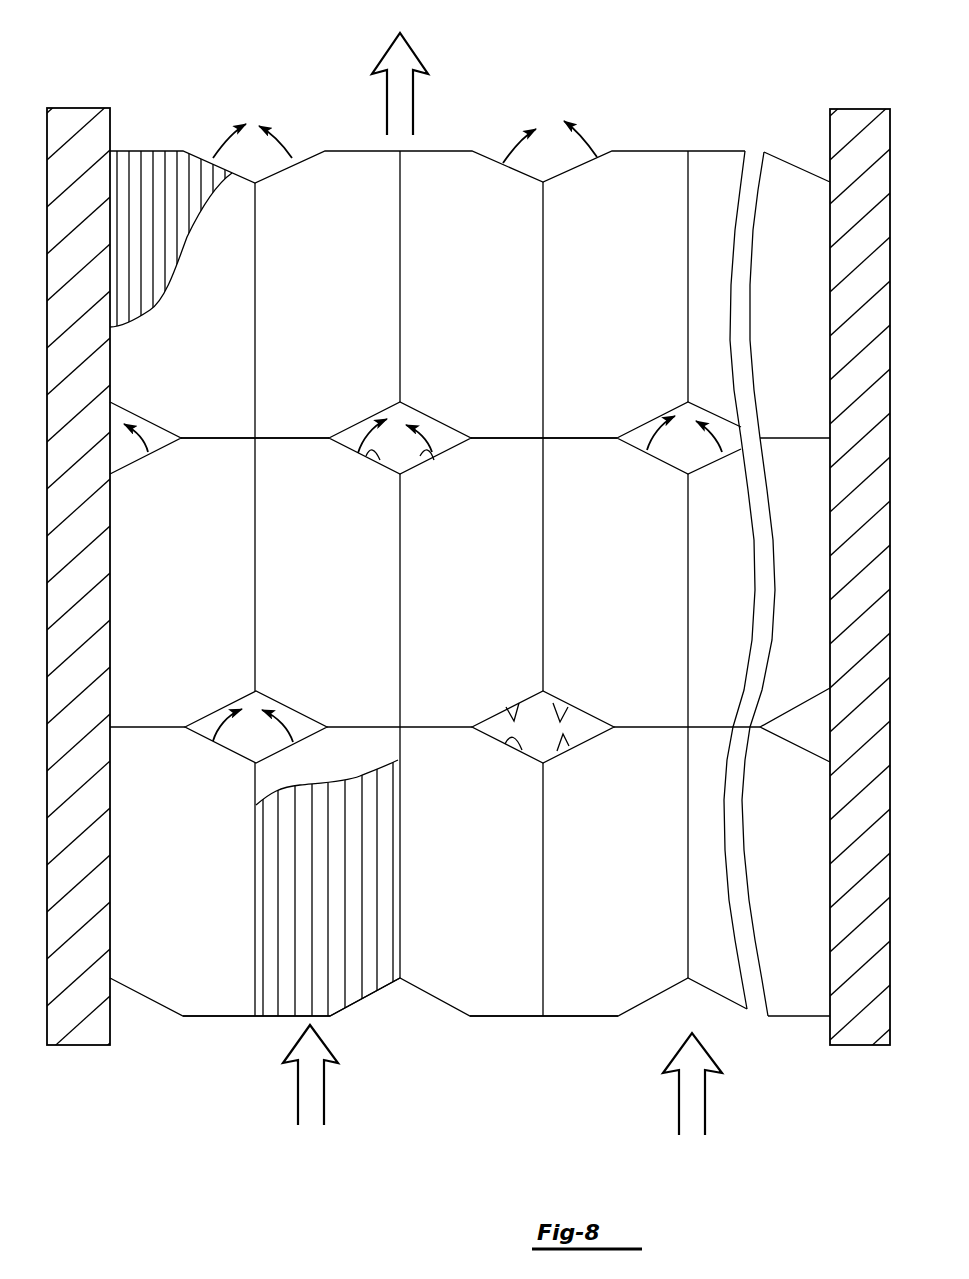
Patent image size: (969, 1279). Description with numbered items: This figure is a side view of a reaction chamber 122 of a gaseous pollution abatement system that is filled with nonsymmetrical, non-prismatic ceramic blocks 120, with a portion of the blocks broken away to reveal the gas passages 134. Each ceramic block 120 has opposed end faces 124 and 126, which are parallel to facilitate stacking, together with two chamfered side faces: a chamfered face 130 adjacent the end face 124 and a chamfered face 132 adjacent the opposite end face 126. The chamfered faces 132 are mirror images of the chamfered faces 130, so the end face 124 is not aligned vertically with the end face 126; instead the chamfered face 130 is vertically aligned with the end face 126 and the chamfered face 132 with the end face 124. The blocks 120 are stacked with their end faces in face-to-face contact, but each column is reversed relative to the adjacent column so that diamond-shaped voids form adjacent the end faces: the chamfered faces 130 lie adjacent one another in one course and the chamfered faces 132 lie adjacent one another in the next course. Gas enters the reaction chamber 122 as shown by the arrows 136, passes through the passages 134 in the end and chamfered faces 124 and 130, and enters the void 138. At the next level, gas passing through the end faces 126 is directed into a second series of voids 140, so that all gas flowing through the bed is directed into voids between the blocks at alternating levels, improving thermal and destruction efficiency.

The ceramic block 120 is at (632, 276).
The reaction chamber 122 is at (110, 900).
The end face 124 is at (300, 440).
The opposite end face 126 is at (216, 438).
The chamfered side face 130 is at (372, 421).
The chamfered side face 132 is at (423, 428).
The gas passage 134 is at (135, 158).
The gas flow arrow 136 is at (395, 104).
The void 138 is at (207, 714).
The second void 140 is at (434, 437).